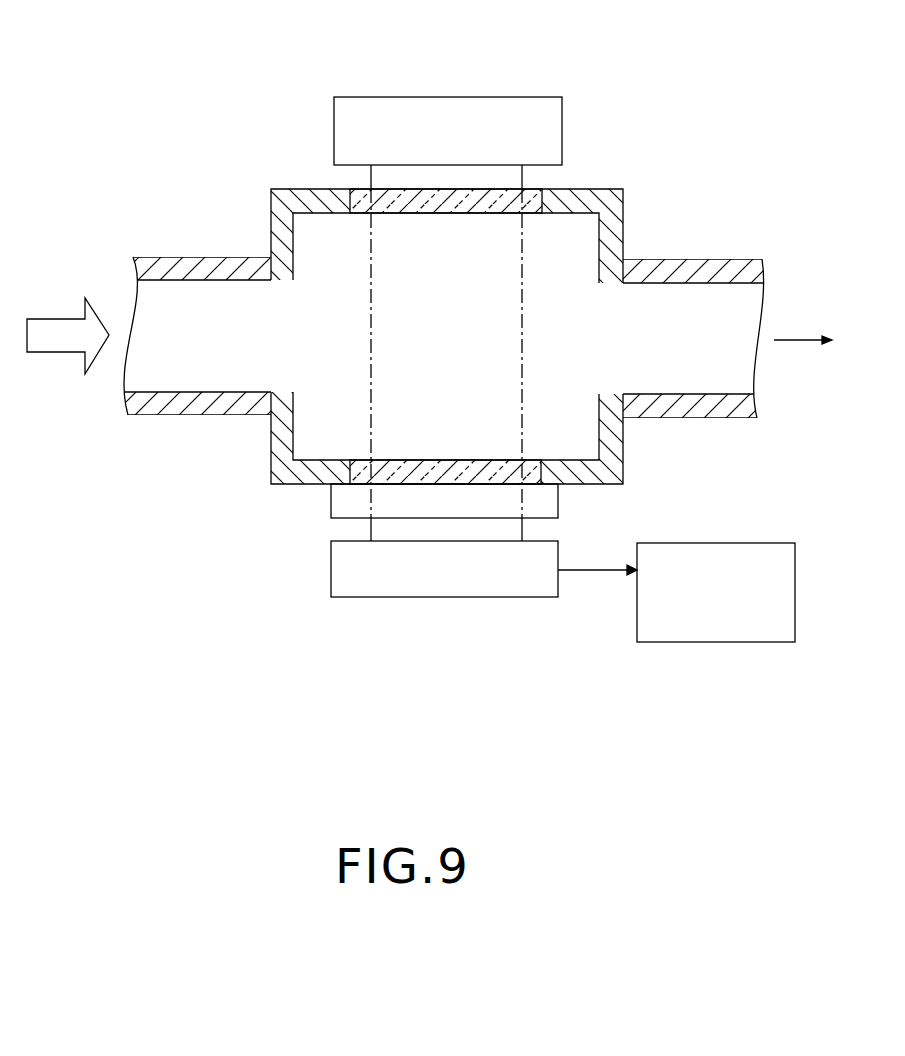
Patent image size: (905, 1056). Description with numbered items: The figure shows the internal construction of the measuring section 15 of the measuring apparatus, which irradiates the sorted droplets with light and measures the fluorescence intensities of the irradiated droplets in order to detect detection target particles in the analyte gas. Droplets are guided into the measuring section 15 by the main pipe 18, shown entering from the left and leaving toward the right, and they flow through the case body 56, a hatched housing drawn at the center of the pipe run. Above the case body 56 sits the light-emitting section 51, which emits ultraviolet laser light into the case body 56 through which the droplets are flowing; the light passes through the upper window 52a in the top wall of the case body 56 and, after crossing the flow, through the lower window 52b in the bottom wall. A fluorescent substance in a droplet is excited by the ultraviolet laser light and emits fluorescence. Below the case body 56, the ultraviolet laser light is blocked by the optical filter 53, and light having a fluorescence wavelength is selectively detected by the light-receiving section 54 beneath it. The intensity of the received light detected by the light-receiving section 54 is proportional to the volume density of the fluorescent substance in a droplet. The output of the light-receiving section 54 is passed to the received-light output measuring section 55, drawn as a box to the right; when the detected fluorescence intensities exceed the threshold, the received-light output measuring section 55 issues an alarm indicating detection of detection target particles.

The measuring section 15 is at (415, 349).
The main pipe 18 is at (188, 262).
The light-emitting section 51 is at (452, 97).
The upper window 52a is at (460, 208).
The lower window 52b is at (432, 468).
The optical filter 53 is at (343, 500).
The light-receiving section 54 is at (445, 598).
The received-light output measuring section 55 is at (718, 642).
The case body 56 is at (271, 203).